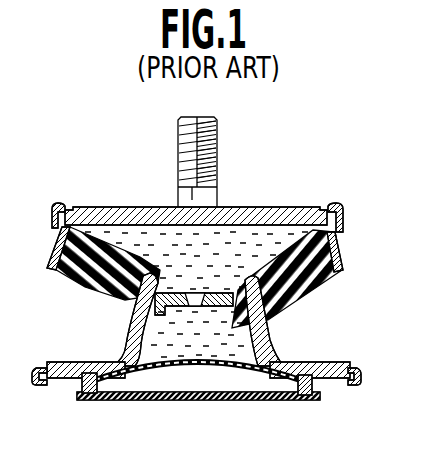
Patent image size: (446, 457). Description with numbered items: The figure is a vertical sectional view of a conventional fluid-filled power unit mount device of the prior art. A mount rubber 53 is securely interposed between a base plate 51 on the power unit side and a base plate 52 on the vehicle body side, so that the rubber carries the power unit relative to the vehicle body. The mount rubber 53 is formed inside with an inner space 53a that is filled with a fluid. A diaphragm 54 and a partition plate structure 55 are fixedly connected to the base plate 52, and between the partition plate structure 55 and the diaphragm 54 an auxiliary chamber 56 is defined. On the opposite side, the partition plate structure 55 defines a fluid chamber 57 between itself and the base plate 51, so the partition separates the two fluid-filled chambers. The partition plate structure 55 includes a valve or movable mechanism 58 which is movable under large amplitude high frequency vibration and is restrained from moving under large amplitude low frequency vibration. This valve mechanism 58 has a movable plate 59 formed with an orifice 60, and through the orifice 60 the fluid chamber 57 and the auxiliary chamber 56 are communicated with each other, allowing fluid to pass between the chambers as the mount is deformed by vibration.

The base plate 51 is at (283, 216).
The base plate 52 is at (348, 362).
The mount rubber 53 is at (310, 283).
The inner space 53a is at (306, 219).
The diaphragm 54 is at (257, 376).
The partition plate structure 55 is at (148, 287).
The auxiliary chamber 56 is at (183, 358).
The fluid chamber 57 is at (117, 234).
The valve or movable mechanism 58 is at (172, 271).
The movable plate 59 is at (262, 323).
The orifice 60 is at (233, 229).